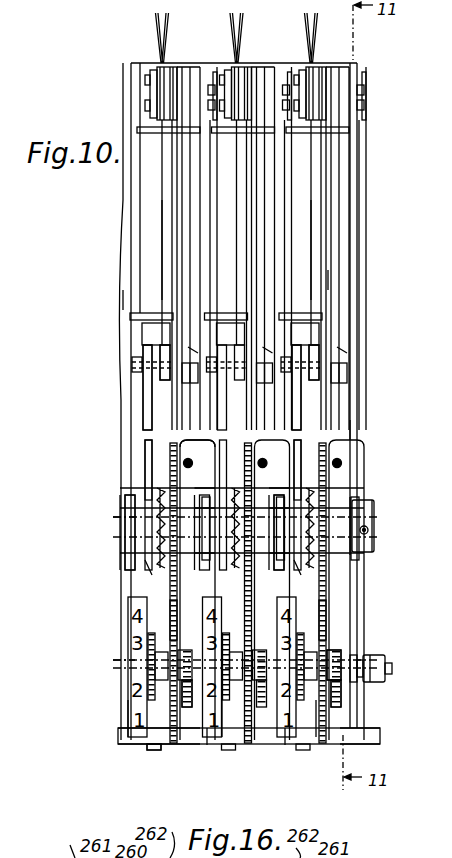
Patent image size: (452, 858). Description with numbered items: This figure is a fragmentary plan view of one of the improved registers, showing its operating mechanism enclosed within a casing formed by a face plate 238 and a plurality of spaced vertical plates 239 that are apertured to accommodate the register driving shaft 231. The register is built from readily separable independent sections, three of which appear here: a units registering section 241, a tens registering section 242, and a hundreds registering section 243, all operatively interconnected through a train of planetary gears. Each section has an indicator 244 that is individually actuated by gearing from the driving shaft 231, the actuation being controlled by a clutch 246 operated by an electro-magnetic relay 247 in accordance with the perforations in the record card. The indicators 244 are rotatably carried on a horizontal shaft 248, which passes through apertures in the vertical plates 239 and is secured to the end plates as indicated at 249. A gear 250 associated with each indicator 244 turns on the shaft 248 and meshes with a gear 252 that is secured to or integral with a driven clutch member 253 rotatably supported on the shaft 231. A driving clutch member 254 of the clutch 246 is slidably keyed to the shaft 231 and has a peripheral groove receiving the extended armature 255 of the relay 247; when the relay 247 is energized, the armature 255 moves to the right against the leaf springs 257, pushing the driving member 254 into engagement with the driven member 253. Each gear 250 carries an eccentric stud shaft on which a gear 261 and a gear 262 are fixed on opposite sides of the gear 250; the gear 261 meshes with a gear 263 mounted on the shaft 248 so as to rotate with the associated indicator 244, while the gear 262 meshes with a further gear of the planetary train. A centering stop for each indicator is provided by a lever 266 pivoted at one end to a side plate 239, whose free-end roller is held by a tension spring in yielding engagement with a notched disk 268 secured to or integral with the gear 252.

The register driving shaft 231 is at (92, 522).
The face plate 238 is at (118, 744).
The vertical plates 239 is at (142, 415).
The units registering section 241 is at (135, 747).
The tens registering section 242 is at (207, 747).
The hundreds registering section 243 is at (285, 745).
The indicator 244 is at (202, 622).
The clutch 246 is at (153, 574).
The electro-magnetic relay 247 is at (217, 213).
The horizontal shaft 248 is at (125, 683).
The securing of shaft to end plates 249 is at (352, 683).
The gear 250 is at (323, 640).
The gear 252 is at (218, 448).
The driven clutch member 253 is at (125, 530).
The driving clutch member 254 is at (148, 483).
The armature 255 is at (148, 440).
The leaf springs 257 is at (328, 281).
The gear 261 is at (130, 722).
The gear 262 is at (352, 726).
The gear 263 is at (303, 630).
The lever 266 is at (113, 307).
The notched disk 268 is at (125, 555).